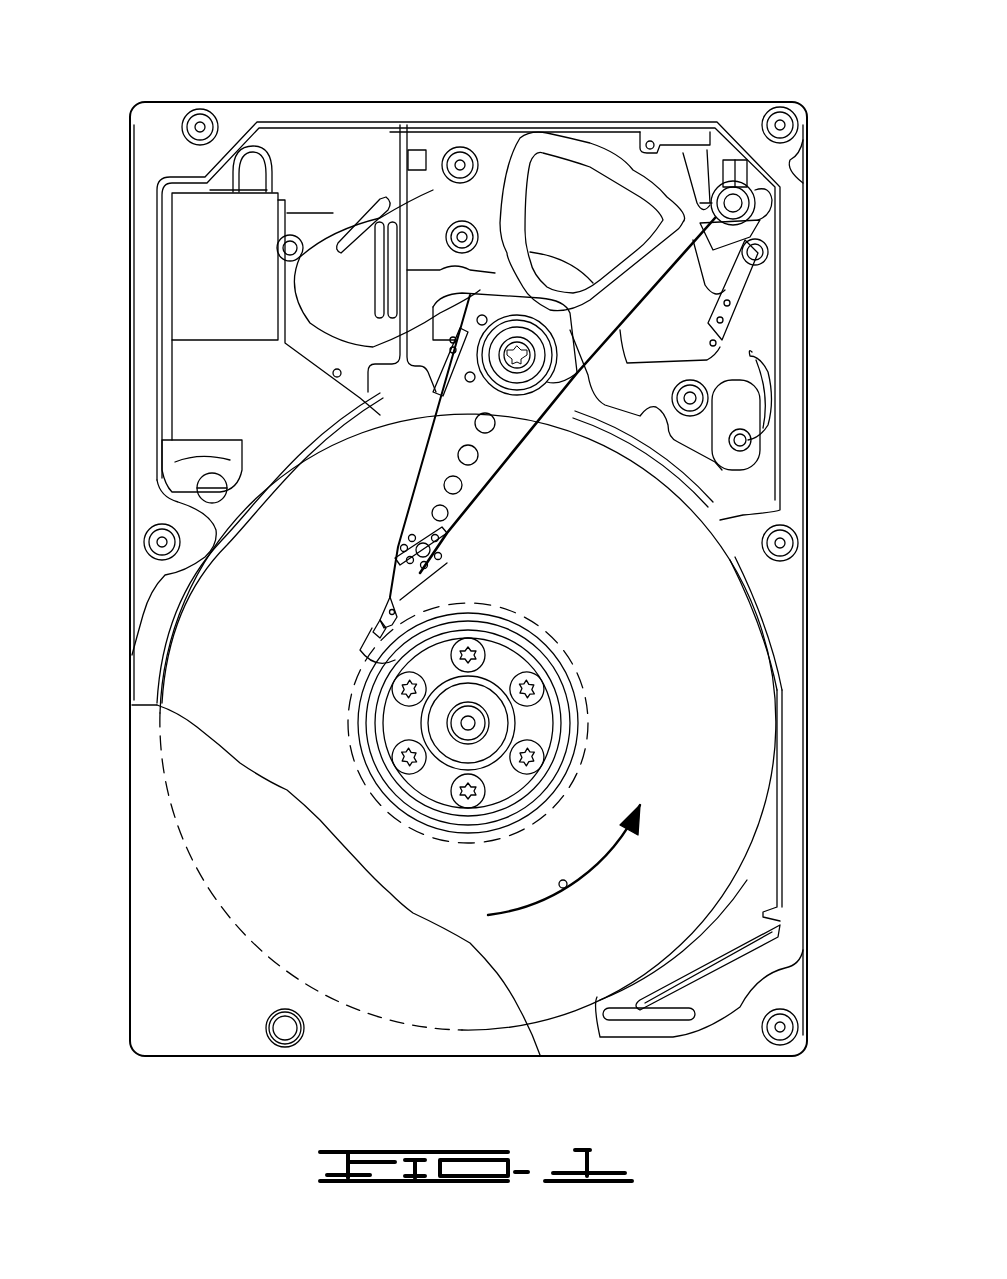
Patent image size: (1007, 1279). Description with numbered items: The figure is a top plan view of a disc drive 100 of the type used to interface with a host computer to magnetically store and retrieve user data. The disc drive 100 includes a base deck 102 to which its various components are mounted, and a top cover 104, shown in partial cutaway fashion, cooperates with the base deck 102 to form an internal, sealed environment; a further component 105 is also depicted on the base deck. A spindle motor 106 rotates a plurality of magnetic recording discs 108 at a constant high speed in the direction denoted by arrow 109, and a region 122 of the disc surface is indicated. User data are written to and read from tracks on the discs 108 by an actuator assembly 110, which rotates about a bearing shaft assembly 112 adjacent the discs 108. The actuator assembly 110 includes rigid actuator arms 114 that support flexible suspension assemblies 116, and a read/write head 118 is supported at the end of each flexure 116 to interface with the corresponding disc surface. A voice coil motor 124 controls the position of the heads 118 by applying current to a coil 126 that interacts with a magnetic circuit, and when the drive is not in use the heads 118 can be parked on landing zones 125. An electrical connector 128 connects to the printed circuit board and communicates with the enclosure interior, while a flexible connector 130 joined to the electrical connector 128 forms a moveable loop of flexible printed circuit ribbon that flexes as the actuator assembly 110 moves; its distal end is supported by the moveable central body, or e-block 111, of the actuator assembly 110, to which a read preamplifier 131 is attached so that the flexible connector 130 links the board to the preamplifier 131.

The disc drive 100 is at (236, 62).
The base deck 102 is at (150, 430).
The top cover 104 is at (157, 867).
The electronics block 105 is at (155, 212).
The spindle motor 106 is at (470, 723).
The magnetic recording discs 108 is at (747, 768).
The arrow 109 is at (567, 885).
The actuator assembly 110 is at (519, 455).
The e-block 111 is at (547, 382).
The bearing shaft assembly 112 is at (548, 372).
The actuator arms 114 is at (470, 497).
The flexible suspension assemblies 116 is at (393, 587).
The read/write head 118 is at (380, 630).
The disc surface 122 is at (318, 745).
The voice coil motor 124 is at (458, 120).
The landing zones 125 is at (537, 625).
The coil 126 is at (600, 160).
The electrical connector 128 is at (343, 210).
The flexible connector 130 is at (292, 298).
The read preamplifier 131 is at (477, 293).